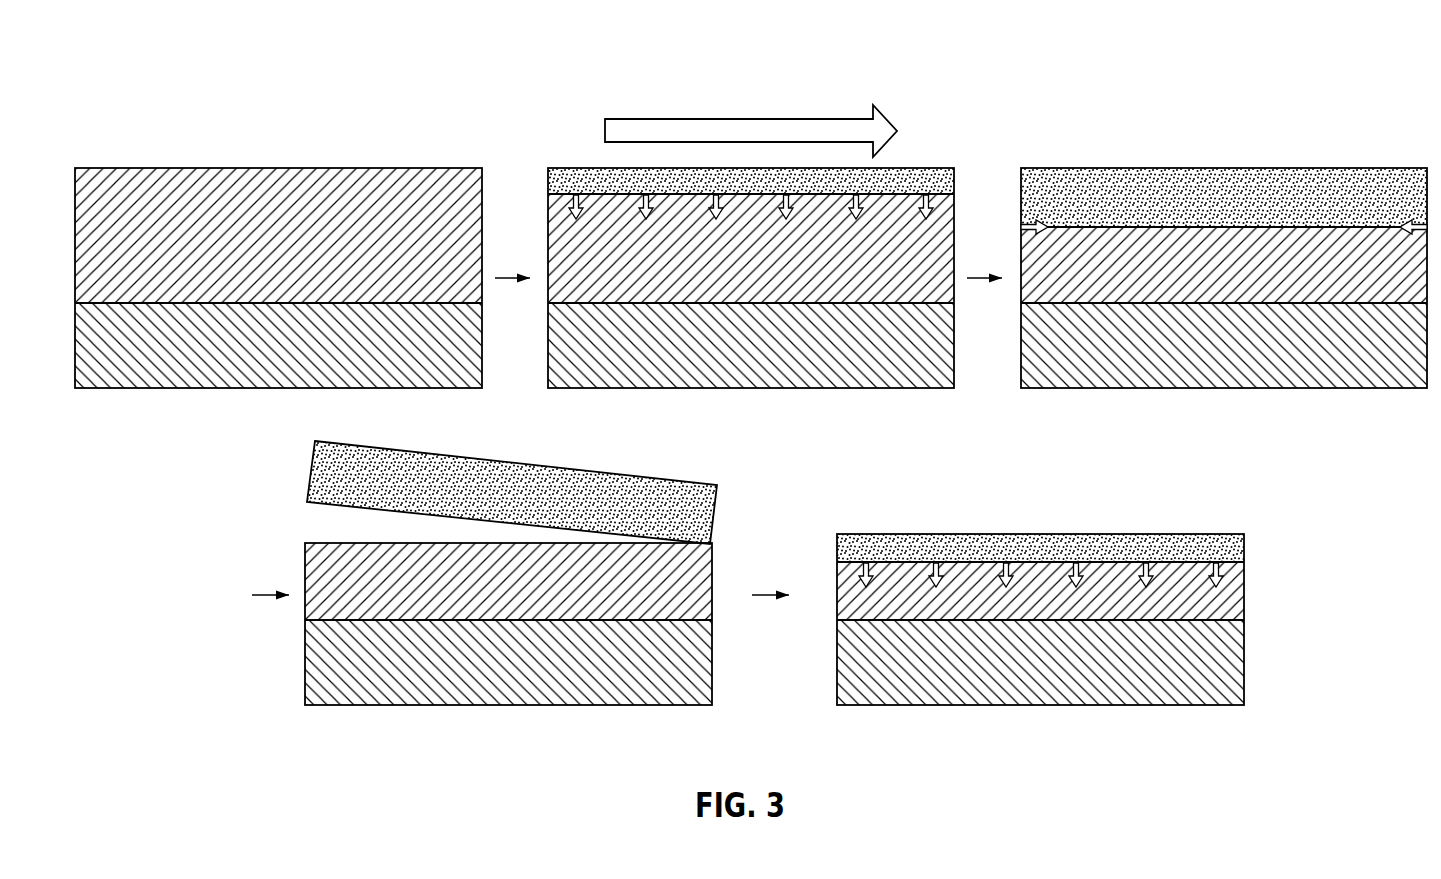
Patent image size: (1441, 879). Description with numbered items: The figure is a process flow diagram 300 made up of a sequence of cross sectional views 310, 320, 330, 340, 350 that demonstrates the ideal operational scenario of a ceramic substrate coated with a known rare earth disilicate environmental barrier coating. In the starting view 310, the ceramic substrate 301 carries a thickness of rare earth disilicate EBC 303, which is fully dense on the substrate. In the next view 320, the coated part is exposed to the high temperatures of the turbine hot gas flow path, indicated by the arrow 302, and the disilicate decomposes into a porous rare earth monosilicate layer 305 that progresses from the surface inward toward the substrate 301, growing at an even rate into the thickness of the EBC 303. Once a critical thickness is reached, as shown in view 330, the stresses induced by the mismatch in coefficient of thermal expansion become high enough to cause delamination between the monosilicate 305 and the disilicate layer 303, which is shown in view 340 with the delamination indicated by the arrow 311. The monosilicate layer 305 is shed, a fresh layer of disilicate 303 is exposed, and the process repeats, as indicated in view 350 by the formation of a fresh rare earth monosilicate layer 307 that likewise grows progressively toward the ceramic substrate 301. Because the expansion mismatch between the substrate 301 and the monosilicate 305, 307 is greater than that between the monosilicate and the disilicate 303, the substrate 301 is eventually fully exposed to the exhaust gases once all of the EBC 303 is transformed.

The process flow diagram 300 is at (176, 67).
The ceramic substrate 301 is at (255, 359).
The arrow 302 is at (748, 118).
The rare earth disilicate EBC 303 is at (255, 249).
The porous rare earth monosilicate layer 305 is at (575, 175).
The fresh rare earth monosilicate layer 307 is at (992, 541).
The view 310 is at (193, 140).
The arrow 311 is at (317, 519).
The view 320 is at (929, 141).
The view 330 is at (1297, 138).
The view 340 is at (652, 464).
The view 350 is at (1162, 504).